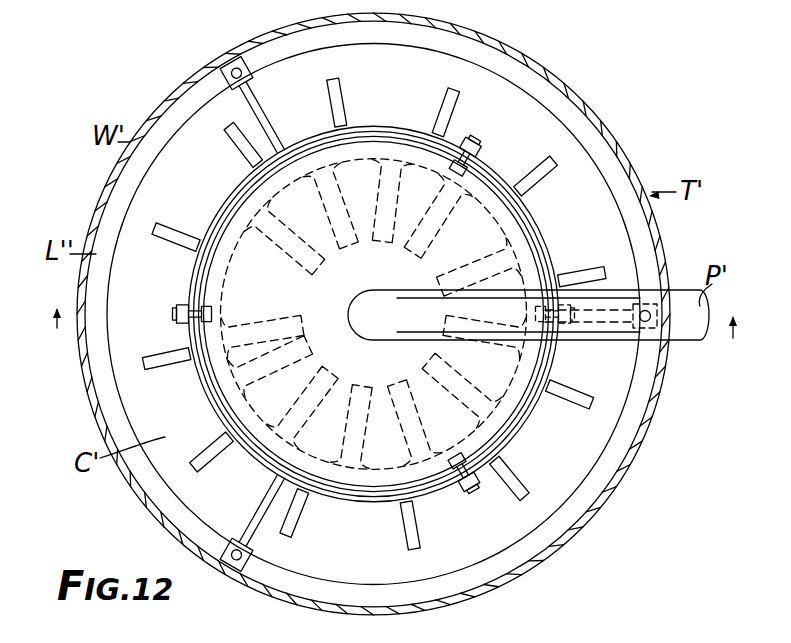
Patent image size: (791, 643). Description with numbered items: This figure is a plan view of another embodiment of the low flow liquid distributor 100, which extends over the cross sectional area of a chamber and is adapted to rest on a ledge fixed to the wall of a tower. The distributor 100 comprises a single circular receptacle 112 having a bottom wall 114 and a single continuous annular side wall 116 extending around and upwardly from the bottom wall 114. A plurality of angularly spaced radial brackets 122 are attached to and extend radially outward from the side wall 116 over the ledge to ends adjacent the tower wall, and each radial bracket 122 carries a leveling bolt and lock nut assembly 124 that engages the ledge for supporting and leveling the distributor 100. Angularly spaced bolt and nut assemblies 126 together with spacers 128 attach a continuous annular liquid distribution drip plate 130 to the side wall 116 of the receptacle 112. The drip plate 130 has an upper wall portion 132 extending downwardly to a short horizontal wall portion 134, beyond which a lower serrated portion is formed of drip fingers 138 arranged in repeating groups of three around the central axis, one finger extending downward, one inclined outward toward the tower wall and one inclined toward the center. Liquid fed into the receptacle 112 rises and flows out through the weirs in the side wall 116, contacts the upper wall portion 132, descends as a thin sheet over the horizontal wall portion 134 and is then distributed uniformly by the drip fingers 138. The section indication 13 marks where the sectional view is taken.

The low flow liquid distributor 100 is at (422, 295).
The receptacle 112 is at (532, 405).
The bottom wall 114 is at (362, 196).
The side wall 116 is at (232, 212).
The radial bracket 122 is at (262, 118).
The leveling bolt and lock nut assembly 124 is at (237, 62).
The bolt and nut assembly 126 is at (175, 318).
The spacer 128 is at (195, 298).
The liquid distribution drip plate 130 is at (512, 445).
The upper wall portion 132 is at (200, 392).
The horizontal wall portion 134 is at (572, 233).
The drip finger 138 is at (400, 525).
The section line for FIG. 13 is at (396, 339).